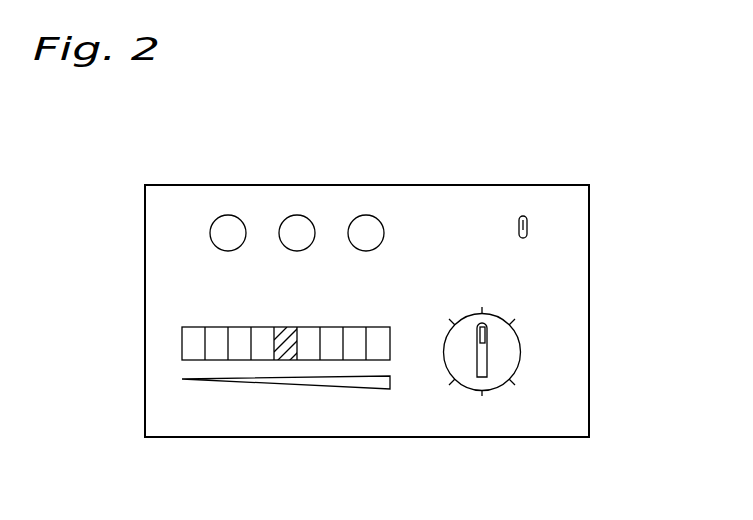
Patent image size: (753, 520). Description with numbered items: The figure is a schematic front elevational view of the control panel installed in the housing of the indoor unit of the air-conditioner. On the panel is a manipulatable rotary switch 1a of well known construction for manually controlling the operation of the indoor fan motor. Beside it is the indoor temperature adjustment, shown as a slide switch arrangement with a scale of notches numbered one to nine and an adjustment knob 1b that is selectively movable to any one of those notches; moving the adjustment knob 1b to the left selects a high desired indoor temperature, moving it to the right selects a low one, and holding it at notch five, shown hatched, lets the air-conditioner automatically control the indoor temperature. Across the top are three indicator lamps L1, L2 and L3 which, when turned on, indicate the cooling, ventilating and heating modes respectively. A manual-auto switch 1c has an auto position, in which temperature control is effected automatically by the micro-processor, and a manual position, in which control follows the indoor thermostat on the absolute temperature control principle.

The indicator lamp L1 is at (228, 215).
The indicator lamp L2 is at (299, 215).
The indicator lamp L3 is at (370, 215).
The rotary switch 1a is at (500, 383).
The adjustment knob 1b is at (278, 359).
The manual-auto switch 1c is at (530, 232).